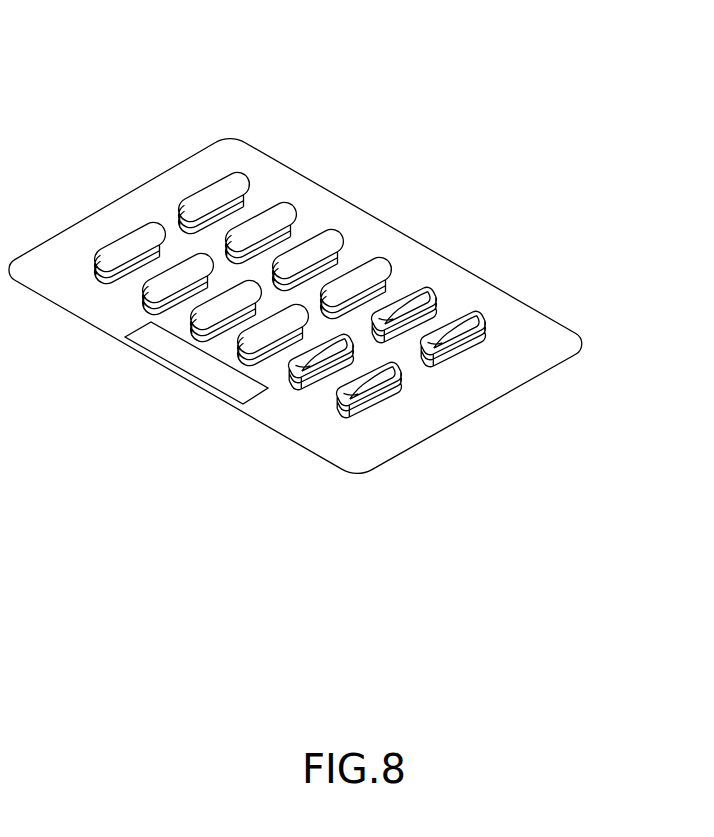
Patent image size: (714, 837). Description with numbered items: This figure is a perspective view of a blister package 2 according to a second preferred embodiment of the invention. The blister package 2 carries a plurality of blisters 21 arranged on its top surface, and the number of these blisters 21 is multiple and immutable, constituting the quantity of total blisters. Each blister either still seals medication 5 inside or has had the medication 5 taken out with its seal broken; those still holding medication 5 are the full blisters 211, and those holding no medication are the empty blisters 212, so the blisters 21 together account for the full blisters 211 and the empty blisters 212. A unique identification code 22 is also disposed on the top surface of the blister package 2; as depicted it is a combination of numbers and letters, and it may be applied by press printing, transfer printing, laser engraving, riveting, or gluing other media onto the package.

The blister package 2 is at (419, 35).
The blisters 21 is at (157, 205).
The full blisters 211 is at (213, 173).
The empty blisters 212 is at (484, 304).
The unique identification code 22 is at (158, 357).
The medication 5 is at (273, 223).